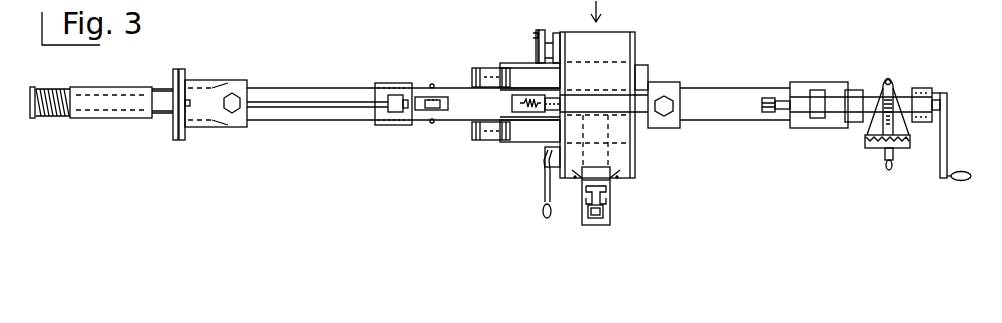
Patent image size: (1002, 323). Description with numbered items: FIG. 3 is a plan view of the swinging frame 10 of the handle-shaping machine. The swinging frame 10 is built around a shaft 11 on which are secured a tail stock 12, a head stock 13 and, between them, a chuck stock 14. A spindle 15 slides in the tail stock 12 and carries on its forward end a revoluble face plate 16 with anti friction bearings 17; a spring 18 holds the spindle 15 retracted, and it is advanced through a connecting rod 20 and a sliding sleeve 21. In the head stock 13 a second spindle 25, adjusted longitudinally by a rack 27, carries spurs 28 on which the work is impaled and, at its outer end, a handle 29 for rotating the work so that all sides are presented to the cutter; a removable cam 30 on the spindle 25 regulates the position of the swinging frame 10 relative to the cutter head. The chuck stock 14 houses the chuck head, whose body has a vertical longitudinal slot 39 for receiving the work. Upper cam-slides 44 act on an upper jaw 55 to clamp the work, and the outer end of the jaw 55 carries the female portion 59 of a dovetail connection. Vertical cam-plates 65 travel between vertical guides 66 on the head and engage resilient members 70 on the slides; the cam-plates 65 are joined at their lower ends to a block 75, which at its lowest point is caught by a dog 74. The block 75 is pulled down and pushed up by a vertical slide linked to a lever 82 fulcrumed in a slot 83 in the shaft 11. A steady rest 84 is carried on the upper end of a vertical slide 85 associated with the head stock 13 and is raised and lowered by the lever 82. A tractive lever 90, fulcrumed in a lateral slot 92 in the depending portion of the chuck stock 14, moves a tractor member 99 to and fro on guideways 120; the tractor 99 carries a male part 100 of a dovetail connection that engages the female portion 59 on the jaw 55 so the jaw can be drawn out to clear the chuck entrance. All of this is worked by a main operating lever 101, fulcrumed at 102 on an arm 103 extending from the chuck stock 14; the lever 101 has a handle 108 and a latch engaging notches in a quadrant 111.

The swinging frame 10 is at (518, 74).
The shaft 11 is at (318, 118).
The tail stock 12 is at (205, 105).
The head stock 13 is at (818, 129).
The chuck stock 14 is at (615, 103).
The spindle 15 is at (162, 104).
The revoluble face plate 16 is at (186, 73).
The anti friction bearings 17 is at (176, 68).
The spring 18 is at (52, 120).
The connecting rod 20 is at (342, 108).
The sliding sleeve 21 is at (391, 126).
The spindle 25 is at (834, 101).
The rack 27 is at (878, 142).
The spurs 28 is at (903, 169).
The handle 29 is at (948, 156).
The cam 30 is at (816, 89).
The vertical longitudinal slot 39 is at (604, 103).
The cam-slides 44 is at (501, 64).
The upper jaw 55 is at (598, 174).
The female portion of dovetail connection 59 is at (606, 190).
The vertical cam-plates 65 is at (530, 102).
The vertical guides 66 is at (548, 58).
The resilient members 70 is at (474, 69).
The dog 74 is at (543, 113).
The block 75 is at (511, 103).
The lever 82 is at (430, 108).
The slot 83 is at (419, 96).
The steady rest 84 is at (765, 111).
The vertical slide 85 is at (782, 110).
The tractive lever 90 is at (608, 211).
The lateral slot 92 is at (590, 1).
The tractor member 99 is at (589, 209).
The male part of dovetail connection 100 is at (585, 194).
The main operating lever 101 is at (538, 44).
The fulcrum 102 is at (540, 32).
The arm 103 is at (555, 40).
The handle 108 is at (544, 216).
The quadrant 111 is at (556, 157).
The guideways 120 is at (611, 219).